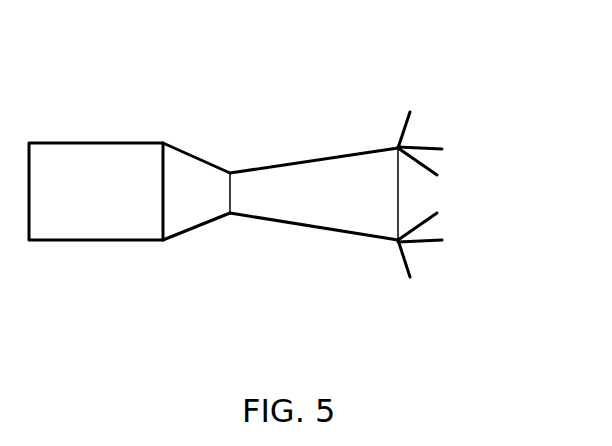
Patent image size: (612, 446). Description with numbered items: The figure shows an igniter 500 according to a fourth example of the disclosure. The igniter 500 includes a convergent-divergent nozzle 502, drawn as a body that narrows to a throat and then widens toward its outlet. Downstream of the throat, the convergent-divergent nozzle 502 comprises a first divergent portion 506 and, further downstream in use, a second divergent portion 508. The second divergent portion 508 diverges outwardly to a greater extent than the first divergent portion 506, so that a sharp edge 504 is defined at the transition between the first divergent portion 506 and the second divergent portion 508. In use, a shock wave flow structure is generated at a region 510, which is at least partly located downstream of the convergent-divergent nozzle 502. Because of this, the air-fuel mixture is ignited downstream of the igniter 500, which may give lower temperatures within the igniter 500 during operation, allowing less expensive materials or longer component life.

The igniter 500 is at (285, 229).
The convergent-divergent nozzle 502 is at (185, 233).
The sharp edge 504 is at (397, 148).
The first divergent portion 506 is at (298, 160).
The second divergent portion 508 is at (407, 130).
The region 510 is at (432, 172).